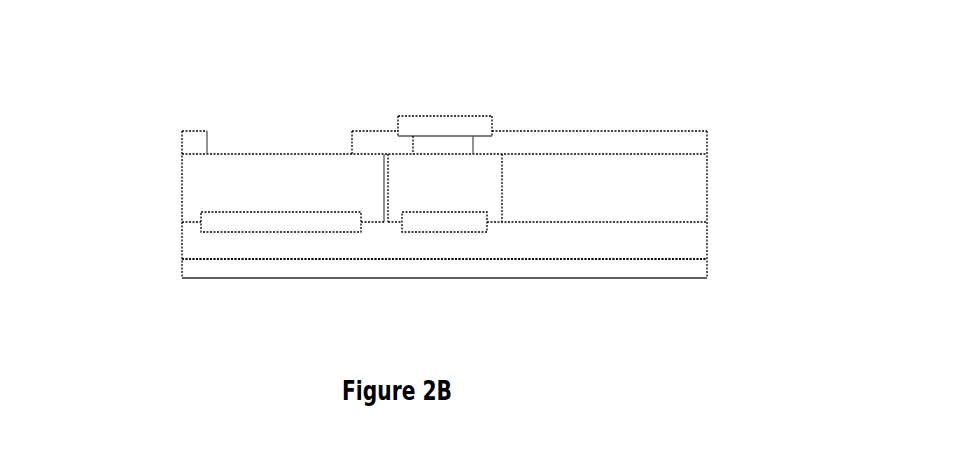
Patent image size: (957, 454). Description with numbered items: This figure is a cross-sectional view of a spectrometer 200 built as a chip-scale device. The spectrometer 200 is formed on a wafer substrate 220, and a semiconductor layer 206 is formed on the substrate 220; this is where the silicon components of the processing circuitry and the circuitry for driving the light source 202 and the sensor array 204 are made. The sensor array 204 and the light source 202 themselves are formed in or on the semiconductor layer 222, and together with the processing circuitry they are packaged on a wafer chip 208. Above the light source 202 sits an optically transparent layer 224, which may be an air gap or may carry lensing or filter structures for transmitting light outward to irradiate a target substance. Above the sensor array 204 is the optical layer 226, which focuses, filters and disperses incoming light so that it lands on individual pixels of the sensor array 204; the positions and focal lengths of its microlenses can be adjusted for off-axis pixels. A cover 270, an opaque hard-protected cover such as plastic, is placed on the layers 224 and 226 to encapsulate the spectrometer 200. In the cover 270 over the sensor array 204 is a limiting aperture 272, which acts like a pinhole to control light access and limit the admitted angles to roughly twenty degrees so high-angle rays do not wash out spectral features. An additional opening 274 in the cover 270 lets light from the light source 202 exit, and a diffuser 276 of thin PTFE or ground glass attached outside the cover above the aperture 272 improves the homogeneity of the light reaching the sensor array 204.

The spectrometer 200 is at (101, 123).
The light source 202 is at (205, 232).
The sensor array 204 is at (453, 225).
The semiconductor layer 206 is at (697, 250).
The wafer chip 208 is at (387, 163).
The wafer substrate 220 is at (230, 269).
The semiconductor layer 222 is at (610, 237).
The optically transparent layer 224 is at (202, 188).
The optical layer 226 is at (491, 172).
The cover 270 is at (698, 142).
The limiting aperture 272 is at (440, 142).
The additional opening 274 is at (242, 142).
The diffuser 276 is at (430, 130).